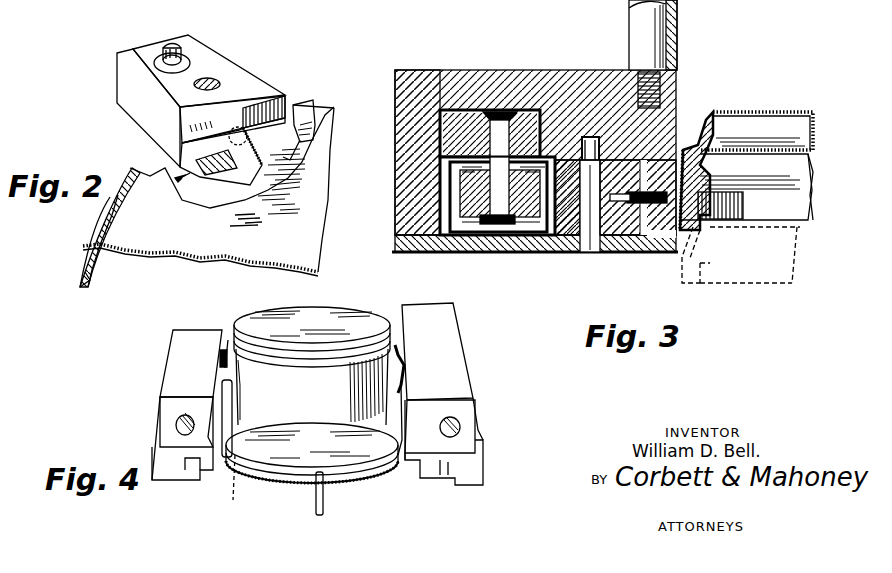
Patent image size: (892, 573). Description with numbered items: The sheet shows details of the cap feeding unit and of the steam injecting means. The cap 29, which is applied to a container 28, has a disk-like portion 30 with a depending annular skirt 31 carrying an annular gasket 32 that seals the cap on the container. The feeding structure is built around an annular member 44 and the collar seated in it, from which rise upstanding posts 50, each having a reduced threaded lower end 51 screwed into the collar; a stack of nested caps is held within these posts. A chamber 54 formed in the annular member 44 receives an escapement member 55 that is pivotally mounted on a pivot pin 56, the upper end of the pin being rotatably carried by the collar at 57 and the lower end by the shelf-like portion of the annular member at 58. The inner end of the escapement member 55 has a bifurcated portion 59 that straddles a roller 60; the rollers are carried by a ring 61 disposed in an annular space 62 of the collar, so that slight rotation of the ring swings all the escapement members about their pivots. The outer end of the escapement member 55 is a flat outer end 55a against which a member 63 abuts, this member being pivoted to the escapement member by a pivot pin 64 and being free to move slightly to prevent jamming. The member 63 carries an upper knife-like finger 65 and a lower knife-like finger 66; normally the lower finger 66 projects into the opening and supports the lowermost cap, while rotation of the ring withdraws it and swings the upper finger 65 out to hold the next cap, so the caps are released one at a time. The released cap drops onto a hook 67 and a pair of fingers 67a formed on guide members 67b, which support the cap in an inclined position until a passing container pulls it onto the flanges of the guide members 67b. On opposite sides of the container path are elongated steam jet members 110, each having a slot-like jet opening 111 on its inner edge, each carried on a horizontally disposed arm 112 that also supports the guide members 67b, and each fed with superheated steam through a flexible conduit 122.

In FIG. 4, the container 28 is at (372, 312).
In FIG. 2, the cap 29 is at (230, 255).
In FIG. 3, the cap 29 is at (793, 130).
In FIG. 4, the cap 29 is at (340, 308).
In FIG. 2, the disk-like portion 30 is at (155, 222).
In FIG. 3, the disk-like portion 30 is at (750, 110).
In FIG. 4, the disk-like portion 30 is at (360, 468).
In FIG. 2, the annular skirt 31 is at (97, 243).
In FIG. 3, the annular skirt 31 is at (699, 140).
In FIG. 4, the annular skirt 31 is at (400, 470).
In FIG. 2, the annular gasket 32 is at (222, 160).
In FIG. 3, the annular gasket 32 is at (720, 204).
In FIG. 3, the annular member 44 is at (417, 95).
In FIG. 3, the upstanding post 50 is at (678, 26).
In FIG. 3, the reduced threaded lower end 51 is at (672, 78).
In FIG. 3, the chamber 54 is at (463, 228).
In FIG. 2, the escapement member 55 is at (117, 85).
In FIG. 3, the escapement member 55 is at (625, 215).
In FIG. 2, the flat outer end 55a is at (258, 98).
In FIG. 3, the pivot pin 56 is at (572, 250).
In FIG. 2, the upper pivot bearing 57 is at (208, 78).
In FIG. 3, the upper pivot bearing 57 is at (588, 137).
In FIG. 3, the lower pivot bearing 58 is at (590, 218).
In FIG. 2, the bifurcated portion 59 is at (140, 65).
In FIG. 3, the bifurcated portion 59 is at (452, 167).
In FIG. 2, the roller 60 is at (162, 60).
In FIG. 3, the roller 60 is at (470, 202).
In FIG. 3, the ring 61 is at (460, 138).
In FIG. 3, the annular space 62 is at (478, 110).
In FIG. 2, the finger member 63 is at (196, 128).
In FIG. 2, the pivot pin 64 is at (238, 127).
In FIG. 3, the pivot pin 64 is at (657, 205).
In FIG. 2, the upper knife-like finger 65 is at (300, 118).
In FIG. 2, the lower knife-like finger 66 is at (190, 173).
In FIG. 3, the lower knife-like finger 66 is at (695, 232).
In FIG. 4, the hook 67 is at (323, 500).
In FIG. 4, the fingers 67a is at (244, 491).
In FIG. 4, the guide member 67b is at (234, 420).
In FIG. 4, the steam jet member 110 is at (190, 360).
In FIG. 4, the jet opening 111 is at (233, 350).
In FIG. 4, the arm 112 is at (160, 443).
In FIG. 4, the flexible conduit 122 is at (178, 421).